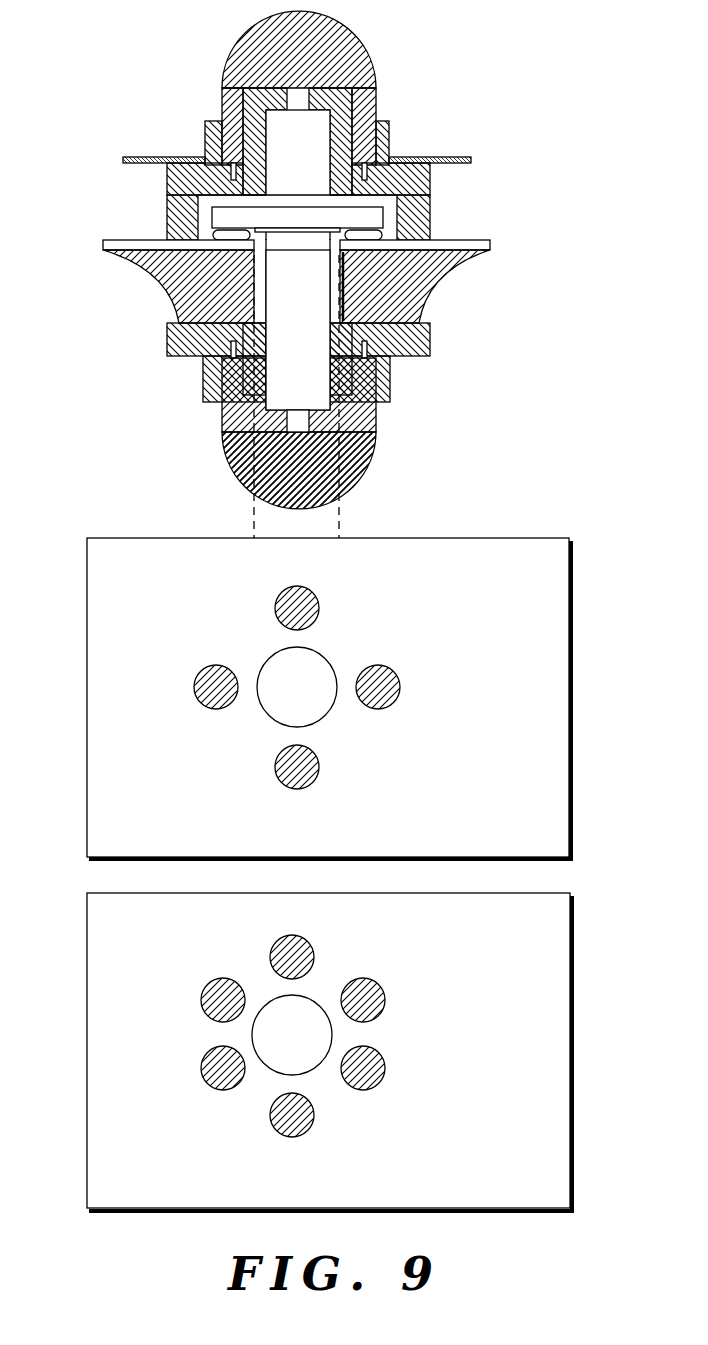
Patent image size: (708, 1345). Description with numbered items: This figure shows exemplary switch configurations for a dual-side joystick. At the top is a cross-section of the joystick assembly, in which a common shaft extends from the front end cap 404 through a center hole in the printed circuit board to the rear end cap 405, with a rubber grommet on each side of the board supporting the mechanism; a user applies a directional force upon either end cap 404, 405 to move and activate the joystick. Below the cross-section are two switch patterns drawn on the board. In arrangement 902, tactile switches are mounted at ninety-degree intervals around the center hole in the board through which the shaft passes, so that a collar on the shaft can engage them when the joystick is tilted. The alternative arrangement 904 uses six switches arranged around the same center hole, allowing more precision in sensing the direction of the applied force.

The front end cap 404 is at (378, 67).
The rear end cap 405 is at (378, 450).
The arrangement 902 is at (545, 555).
The alternative arrangement 904 is at (572, 912).